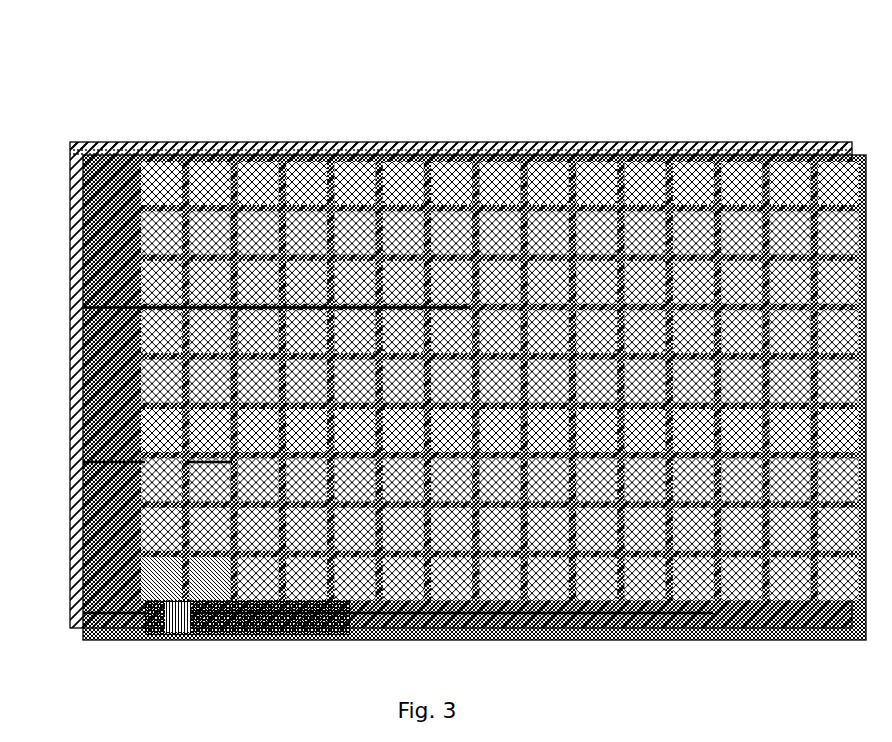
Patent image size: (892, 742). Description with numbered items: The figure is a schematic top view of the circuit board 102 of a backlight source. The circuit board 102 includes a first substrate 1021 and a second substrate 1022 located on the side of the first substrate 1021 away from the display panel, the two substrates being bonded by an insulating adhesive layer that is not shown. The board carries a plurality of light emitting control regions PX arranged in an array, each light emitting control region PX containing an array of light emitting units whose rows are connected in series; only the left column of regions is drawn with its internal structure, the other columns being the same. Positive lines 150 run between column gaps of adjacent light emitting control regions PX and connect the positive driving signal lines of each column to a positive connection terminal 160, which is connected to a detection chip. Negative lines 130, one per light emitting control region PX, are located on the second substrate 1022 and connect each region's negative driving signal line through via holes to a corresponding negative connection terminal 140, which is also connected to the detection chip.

The circuit board 102 is at (425, 70).
The first substrate 1021 is at (507, 146).
The second substrate 1022 is at (405, 146).
The light emitting control region PX is at (177, 158).
The positive line 150 is at (80, 212).
The negative line 130 is at (82, 456).
The positive connection terminal 160 is at (140, 640).
The negative connection terminal 140 is at (170, 640).